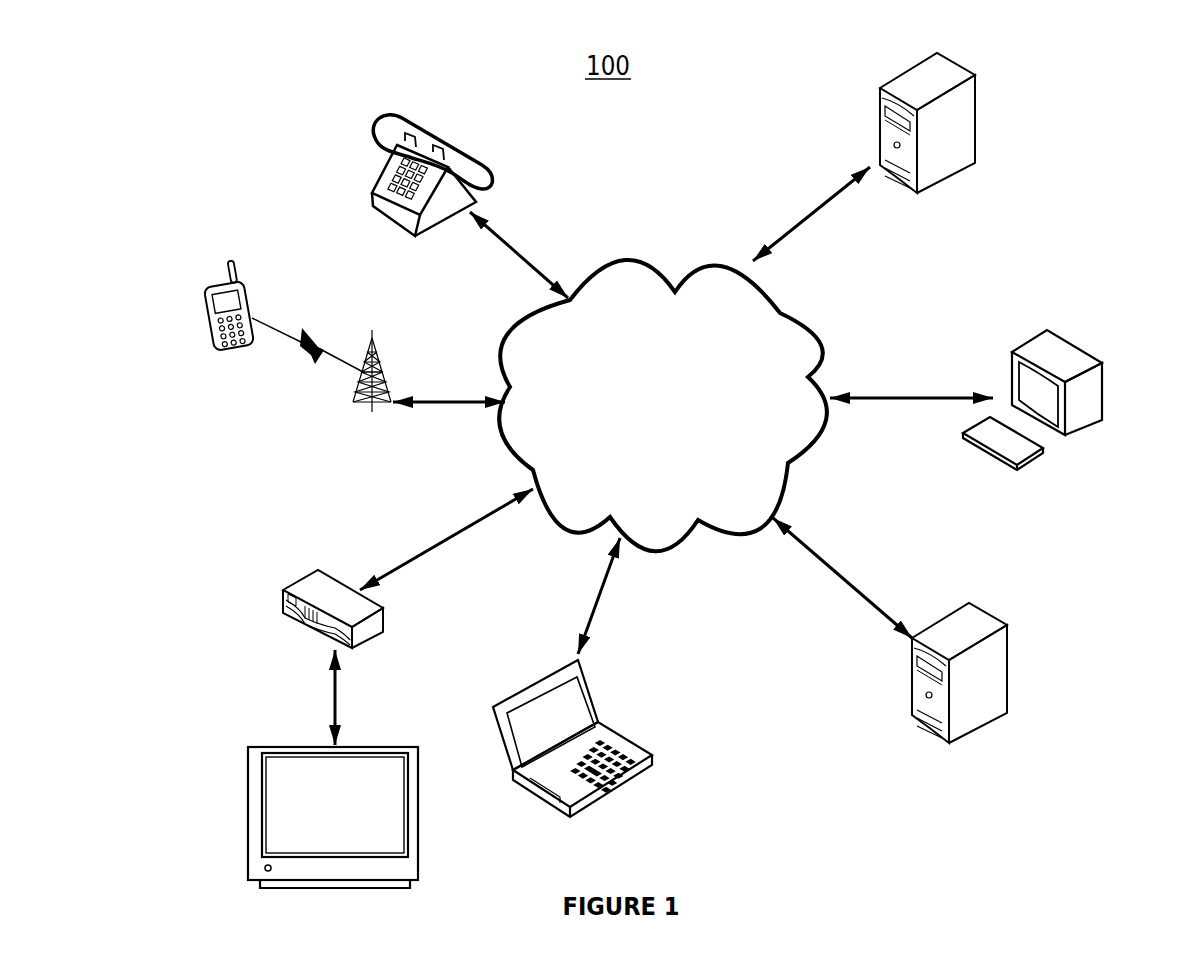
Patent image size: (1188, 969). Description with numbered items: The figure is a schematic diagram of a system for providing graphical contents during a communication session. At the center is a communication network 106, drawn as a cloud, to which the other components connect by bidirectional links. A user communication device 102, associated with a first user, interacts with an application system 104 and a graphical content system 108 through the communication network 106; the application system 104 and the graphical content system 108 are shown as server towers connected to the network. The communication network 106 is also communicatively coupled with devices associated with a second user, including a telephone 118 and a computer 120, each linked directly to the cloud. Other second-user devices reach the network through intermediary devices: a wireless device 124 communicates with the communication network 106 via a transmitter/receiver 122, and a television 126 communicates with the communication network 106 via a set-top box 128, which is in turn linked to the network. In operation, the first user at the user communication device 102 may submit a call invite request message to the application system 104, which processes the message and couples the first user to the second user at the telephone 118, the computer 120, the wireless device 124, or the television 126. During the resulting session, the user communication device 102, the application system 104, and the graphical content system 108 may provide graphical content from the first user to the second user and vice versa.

The user communication device 102 is at (1043, 458).
The application system 104 is at (990, 715).
The communication network 106 is at (793, 460).
The graphical content system 108 is at (963, 167).
The telephone 118 is at (487, 162).
The computer 120 is at (580, 812).
The transmitter/receiver 122 is at (377, 358).
The wireless device 124 is at (230, 353).
The television 126 is at (246, 783).
The set-top box 128 is at (283, 605).